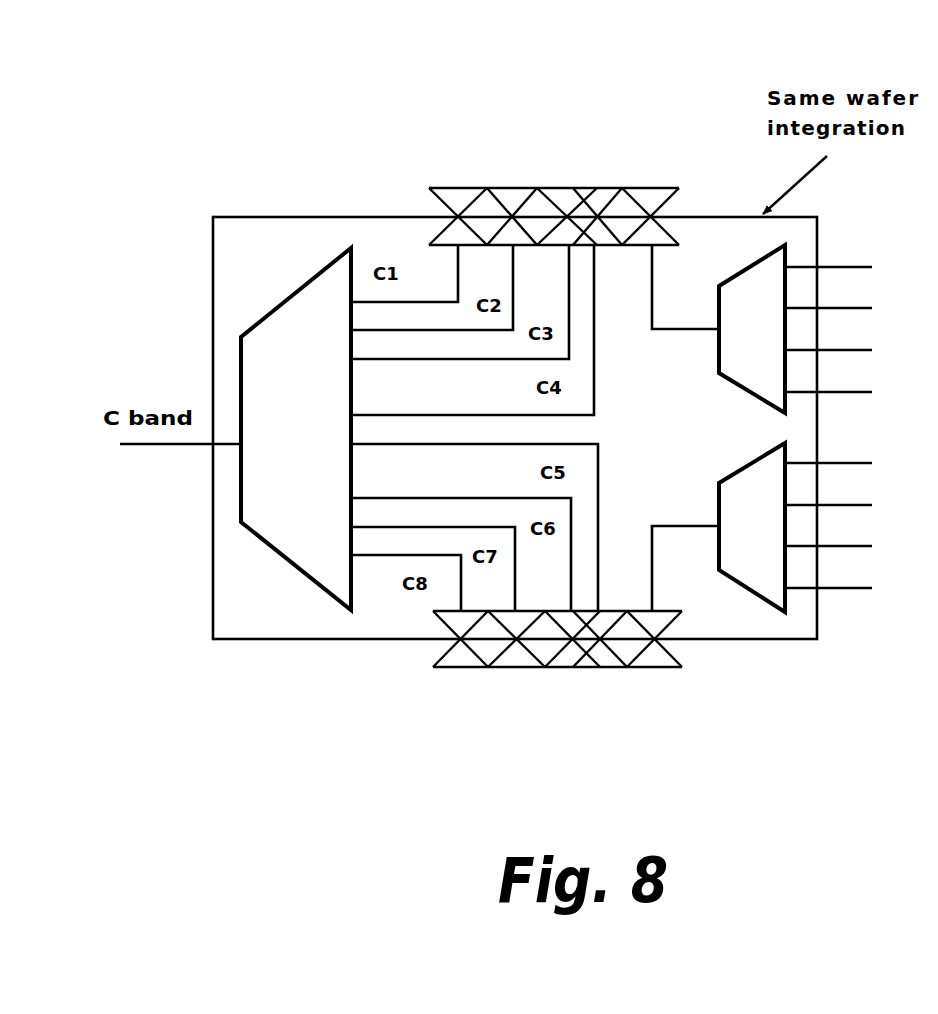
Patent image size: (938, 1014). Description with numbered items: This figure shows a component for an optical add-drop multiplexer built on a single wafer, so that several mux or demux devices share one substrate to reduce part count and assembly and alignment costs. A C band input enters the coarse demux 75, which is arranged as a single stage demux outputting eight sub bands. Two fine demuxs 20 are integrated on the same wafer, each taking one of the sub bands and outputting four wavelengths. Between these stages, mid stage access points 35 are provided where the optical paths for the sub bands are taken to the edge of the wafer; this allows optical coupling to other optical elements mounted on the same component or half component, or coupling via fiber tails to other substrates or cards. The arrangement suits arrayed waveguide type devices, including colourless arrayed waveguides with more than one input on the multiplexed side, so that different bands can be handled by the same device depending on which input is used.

The coarse demux 75 is at (296, 429).
The mid stage access points 35 is at (650, 187).
The fine demux 20 is at (818, 428).